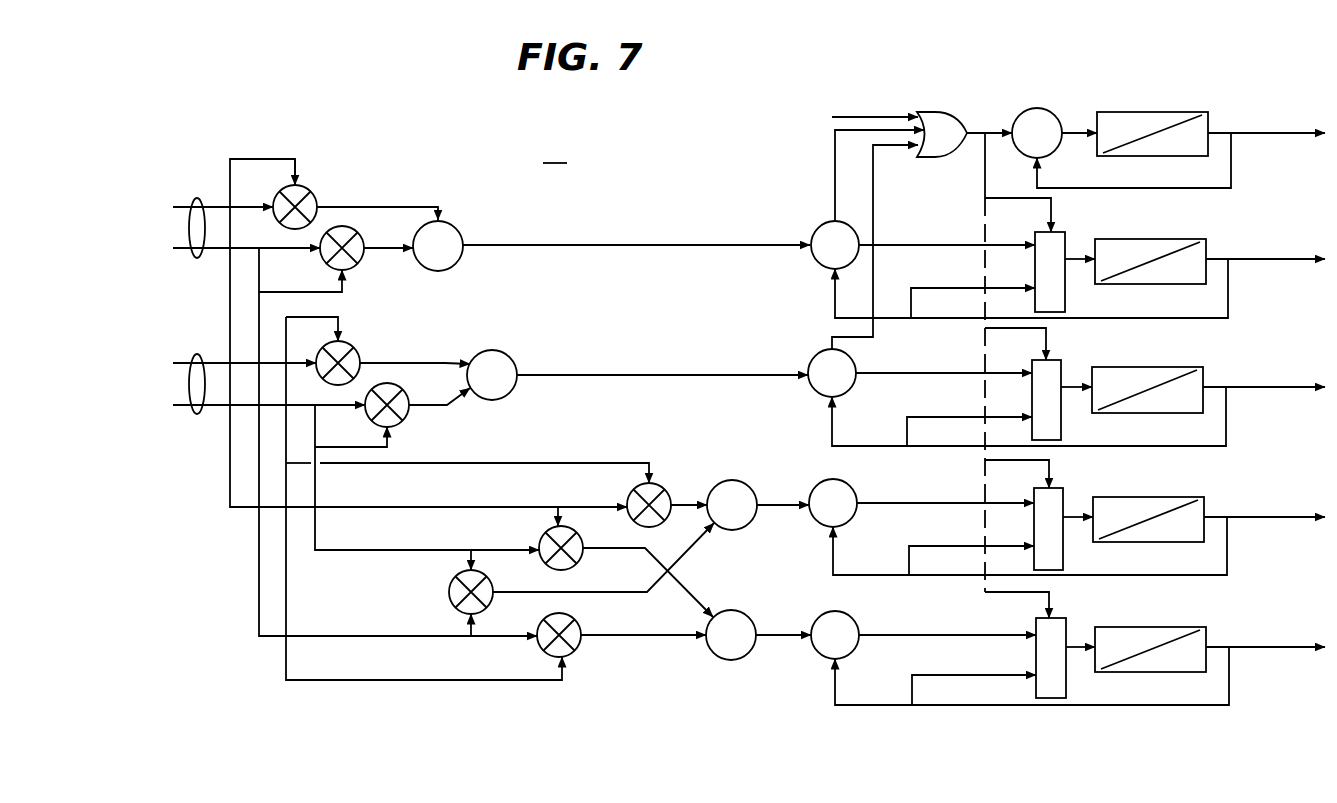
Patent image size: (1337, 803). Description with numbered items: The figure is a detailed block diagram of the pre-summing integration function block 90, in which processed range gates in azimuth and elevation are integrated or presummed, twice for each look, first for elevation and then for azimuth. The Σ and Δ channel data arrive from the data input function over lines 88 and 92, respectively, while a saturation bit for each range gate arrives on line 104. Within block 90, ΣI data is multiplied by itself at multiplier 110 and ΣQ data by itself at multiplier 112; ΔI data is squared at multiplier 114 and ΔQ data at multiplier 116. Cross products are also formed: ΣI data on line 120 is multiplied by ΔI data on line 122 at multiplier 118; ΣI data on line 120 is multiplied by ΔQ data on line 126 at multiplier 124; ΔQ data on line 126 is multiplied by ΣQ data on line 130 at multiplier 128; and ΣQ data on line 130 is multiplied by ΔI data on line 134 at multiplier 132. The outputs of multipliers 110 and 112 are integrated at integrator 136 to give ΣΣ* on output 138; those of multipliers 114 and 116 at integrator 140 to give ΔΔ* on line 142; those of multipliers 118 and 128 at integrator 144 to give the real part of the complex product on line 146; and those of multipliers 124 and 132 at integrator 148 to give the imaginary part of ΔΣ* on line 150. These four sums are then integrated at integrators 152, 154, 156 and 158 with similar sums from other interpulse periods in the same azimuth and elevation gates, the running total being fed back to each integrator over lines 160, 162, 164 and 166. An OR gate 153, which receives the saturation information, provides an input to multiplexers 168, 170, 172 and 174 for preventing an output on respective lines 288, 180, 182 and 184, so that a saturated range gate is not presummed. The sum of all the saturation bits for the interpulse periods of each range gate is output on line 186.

The pre-summing integration function block 90 is at (555, 150).
The Σ channel data line 88 is at (197, 197).
The Δ channel data line 92 is at (198, 355).
The saturation bit line 104 is at (872, 114).
The multiplier 110 is at (304, 188).
The multiplier 112 is at (357, 264).
The multiplier 114 is at (348, 348).
The multiplier 116 is at (402, 414).
The multiplier 118 is at (660, 483).
The ΣI data input line 120 is at (440, 507).
The ΔI data input line 122 is at (489, 463).
The multiplier 124 is at (578, 560).
The ΔQ data input line 126 is at (420, 550).
The multiplier 128 is at (484, 586).
The ΣQ data input line 130 is at (400, 636).
The multiplier 132 is at (578, 623).
The ΔI data input line 134 is at (500, 682).
The integrator 136 is at (455, 229).
The ΣΣ* output line 138 is at (570, 243).
The integrator 140 is at (512, 362).
The ΔΔ* output line 142 is at (647, 375).
The integrator 144 is at (748, 484).
The real-part output line 146 is at (777, 503).
The integrator 148 is at (748, 613).
The imaginary-part output line 150 is at (778, 634).
The integrator 152 is at (818, 229).
The OR gate 153 is at (940, 118).
The integrator 154 is at (822, 353).
The integrator 156 is at (852, 489).
The integrator 158 is at (852, 620).
The feedback line 160 is at (1153, 318).
The feedback line 162 is at (1167, 446).
The feedback line 164 is at (1168, 575).
The feedback line 166 is at (1140, 705).
The multiplexer 168 is at (1066, 237).
The multiplexer 170 is at (1062, 365).
The multiplexer 172 is at (1064, 496).
The multiplexer 174 is at (1067, 626).
The output line 180 is at (1270, 386).
The output line 182 is at (1260, 516).
The output line 184 is at (1257, 646).
The saturation bit sum output line 186 is at (1246, 132).
The output line 288 is at (1250, 258).